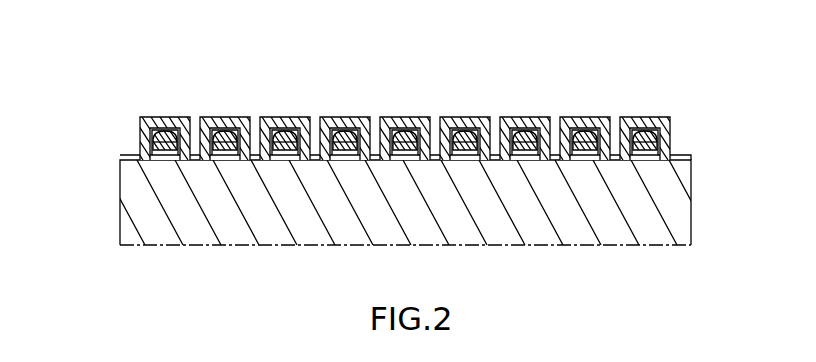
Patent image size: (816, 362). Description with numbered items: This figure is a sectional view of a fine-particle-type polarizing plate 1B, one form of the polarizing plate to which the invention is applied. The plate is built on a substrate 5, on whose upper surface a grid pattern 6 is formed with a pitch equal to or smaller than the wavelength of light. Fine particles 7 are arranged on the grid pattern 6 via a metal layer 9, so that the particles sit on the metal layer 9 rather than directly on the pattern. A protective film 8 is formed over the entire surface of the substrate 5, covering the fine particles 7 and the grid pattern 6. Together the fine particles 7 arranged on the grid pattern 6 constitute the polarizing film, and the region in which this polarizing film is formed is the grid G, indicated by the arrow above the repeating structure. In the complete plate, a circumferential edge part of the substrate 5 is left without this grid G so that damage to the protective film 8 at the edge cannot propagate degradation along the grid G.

The fine-particle-type polarizing plate 1B is at (381, 143).
The substrate 5 is at (674, 204).
The grid pattern 6 is at (672, 160).
The fine particles 7 is at (646, 128).
The protective film 8 is at (638, 126).
The metal layer 9 is at (652, 150).
The grid G is at (398, 114).